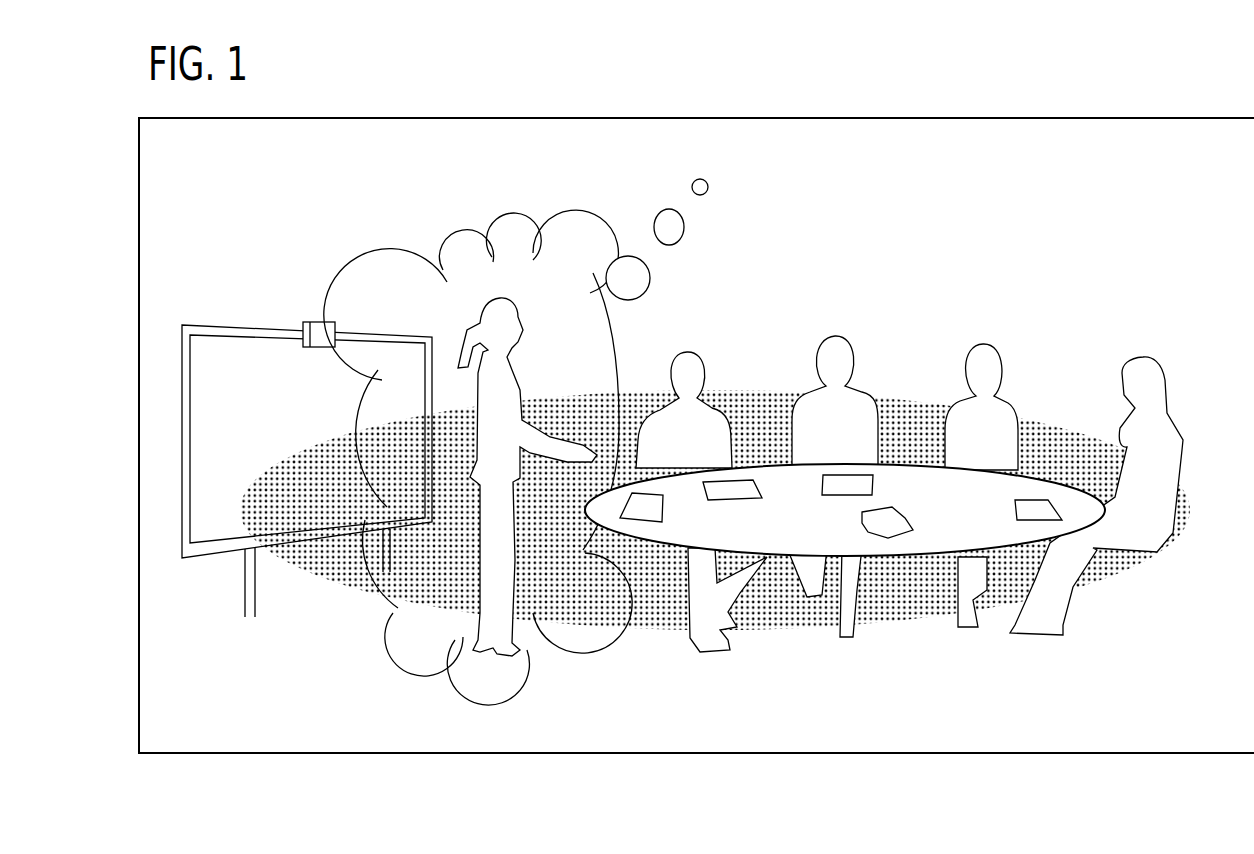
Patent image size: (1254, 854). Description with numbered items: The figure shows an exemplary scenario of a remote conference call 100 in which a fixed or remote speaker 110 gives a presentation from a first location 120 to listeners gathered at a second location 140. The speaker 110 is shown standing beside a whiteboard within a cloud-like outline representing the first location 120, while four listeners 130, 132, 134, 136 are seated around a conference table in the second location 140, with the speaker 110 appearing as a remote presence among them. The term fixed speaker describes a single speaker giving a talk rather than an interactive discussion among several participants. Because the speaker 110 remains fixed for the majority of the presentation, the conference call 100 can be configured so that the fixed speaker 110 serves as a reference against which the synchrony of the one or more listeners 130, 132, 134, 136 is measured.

The remote conference call 100 is at (947, 98).
The fixed speaker 110 is at (510, 690).
The first location 120 is at (527, 207).
The listener 130 is at (715, 302).
The listener 132 is at (862, 280).
The listener 134 is at (1025, 282).
The listener 136 is at (1193, 295).
The second location 140 is at (1040, 727).